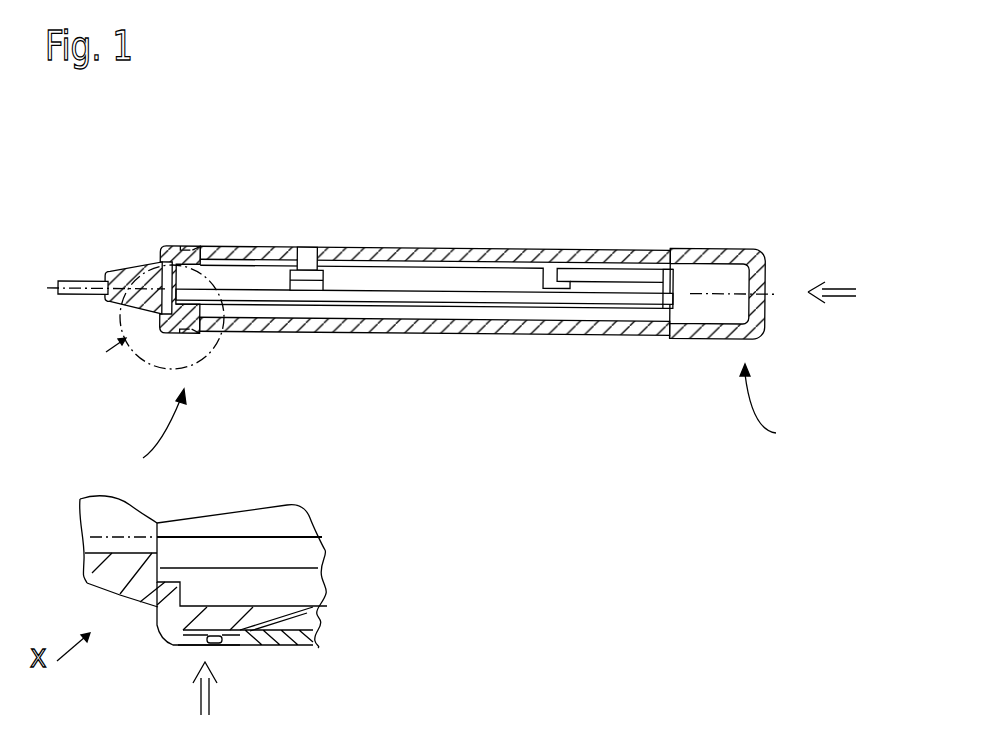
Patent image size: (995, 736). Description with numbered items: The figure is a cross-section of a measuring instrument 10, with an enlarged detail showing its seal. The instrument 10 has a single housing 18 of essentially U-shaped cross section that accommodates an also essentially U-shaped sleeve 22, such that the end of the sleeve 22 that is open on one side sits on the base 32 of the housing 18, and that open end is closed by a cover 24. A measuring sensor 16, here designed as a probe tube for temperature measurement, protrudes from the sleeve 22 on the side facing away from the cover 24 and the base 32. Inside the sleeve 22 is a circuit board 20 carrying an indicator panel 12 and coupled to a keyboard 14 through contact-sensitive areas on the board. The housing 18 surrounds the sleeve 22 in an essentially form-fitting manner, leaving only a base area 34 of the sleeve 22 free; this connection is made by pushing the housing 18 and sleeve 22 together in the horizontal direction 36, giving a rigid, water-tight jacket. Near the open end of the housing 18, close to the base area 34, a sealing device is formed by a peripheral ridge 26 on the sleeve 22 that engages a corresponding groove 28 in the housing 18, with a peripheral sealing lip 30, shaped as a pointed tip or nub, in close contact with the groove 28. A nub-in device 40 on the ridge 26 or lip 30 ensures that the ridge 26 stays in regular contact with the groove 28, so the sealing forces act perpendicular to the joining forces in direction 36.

The measuring instrument 10 is at (406, 86).
The indicator panel 12 is at (605, 275).
The keyboard 14 is at (310, 254).
The measuring sensor 16 is at (70, 283).
The housing 18 is at (470, 249).
The circuit board 20 is at (487, 300).
The sleeve 22 is at (577, 325).
The cover 24 is at (760, 258).
The peripheral ridge 26 is at (170, 249).
The groove 28 is at (197, 248).
The sealing lip 30 is at (186, 250).
The base 32 is at (770, 407).
The base area 34 is at (157, 436).
The horizontal direction 36 is at (846, 292).
The nub-in device 40 is at (313, 607).